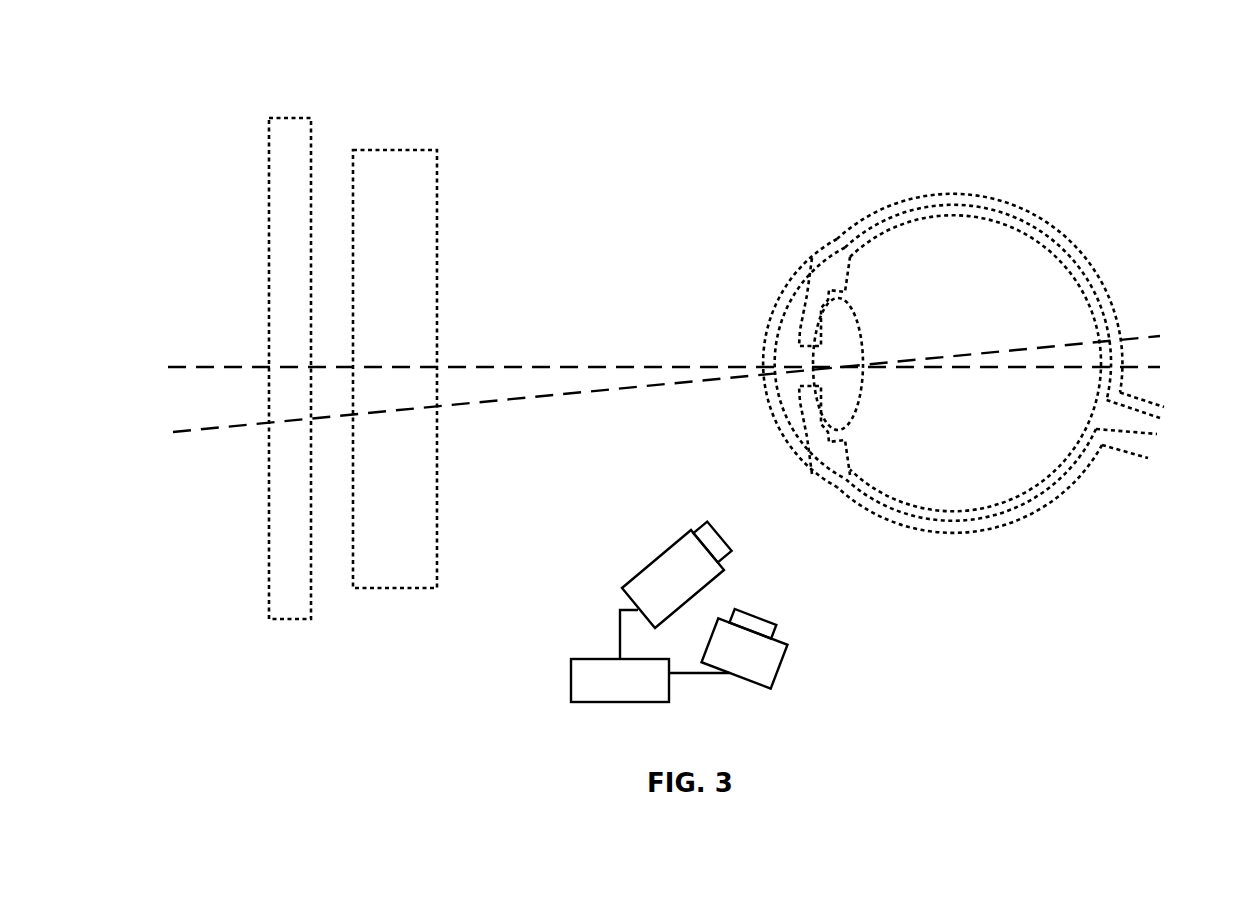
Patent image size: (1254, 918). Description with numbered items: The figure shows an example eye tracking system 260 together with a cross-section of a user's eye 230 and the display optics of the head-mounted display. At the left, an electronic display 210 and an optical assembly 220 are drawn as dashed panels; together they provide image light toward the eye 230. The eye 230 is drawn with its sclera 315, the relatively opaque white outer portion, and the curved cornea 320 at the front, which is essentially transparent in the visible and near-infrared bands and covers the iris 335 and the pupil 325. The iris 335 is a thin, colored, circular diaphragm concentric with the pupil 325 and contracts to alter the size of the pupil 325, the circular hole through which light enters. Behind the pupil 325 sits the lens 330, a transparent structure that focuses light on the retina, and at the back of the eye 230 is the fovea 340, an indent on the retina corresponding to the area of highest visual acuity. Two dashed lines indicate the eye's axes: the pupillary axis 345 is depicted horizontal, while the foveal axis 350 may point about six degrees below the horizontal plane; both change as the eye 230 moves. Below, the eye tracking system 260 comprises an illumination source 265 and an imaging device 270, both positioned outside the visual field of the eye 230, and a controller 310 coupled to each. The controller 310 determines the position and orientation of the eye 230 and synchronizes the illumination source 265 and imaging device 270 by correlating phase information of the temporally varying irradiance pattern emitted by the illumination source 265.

The electronic display 210 is at (290, 114).
The optical assembly 220 is at (393, 146).
The eye 230 is at (945, 346).
The eye tracking system 260 is at (766, 624).
The illumination source 265 is at (651, 560).
The imaging device 270 is at (785, 672).
The controller 310 is at (568, 673).
The sclera 315 is at (826, 237).
The cornea 320 is at (775, 308).
The pupil 325 is at (800, 360).
The lens 330 is at (855, 394).
The iris 335 is at (817, 410).
The fovea 340 is at (1147, 314).
The pupillary axis 345 is at (555, 362).
The foveal axis 350 is at (485, 406).